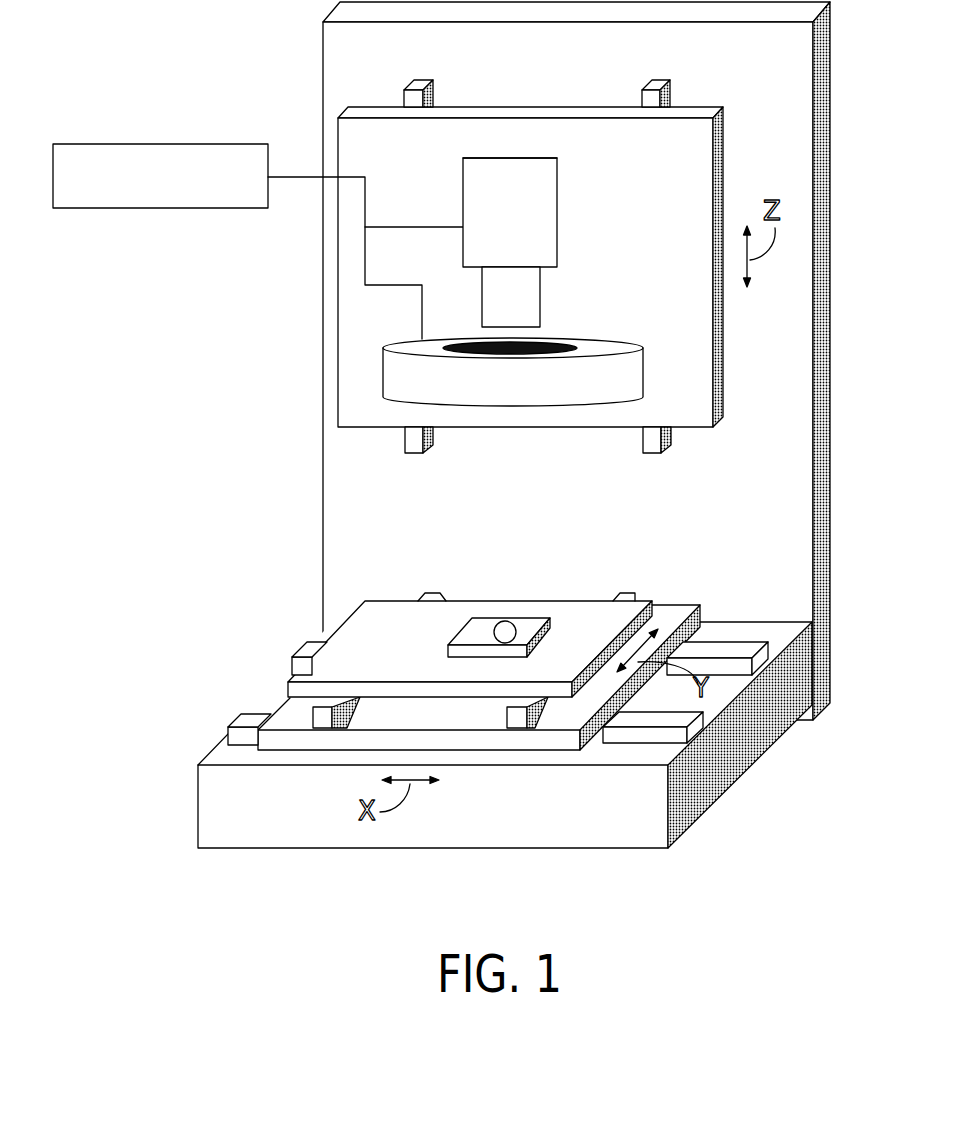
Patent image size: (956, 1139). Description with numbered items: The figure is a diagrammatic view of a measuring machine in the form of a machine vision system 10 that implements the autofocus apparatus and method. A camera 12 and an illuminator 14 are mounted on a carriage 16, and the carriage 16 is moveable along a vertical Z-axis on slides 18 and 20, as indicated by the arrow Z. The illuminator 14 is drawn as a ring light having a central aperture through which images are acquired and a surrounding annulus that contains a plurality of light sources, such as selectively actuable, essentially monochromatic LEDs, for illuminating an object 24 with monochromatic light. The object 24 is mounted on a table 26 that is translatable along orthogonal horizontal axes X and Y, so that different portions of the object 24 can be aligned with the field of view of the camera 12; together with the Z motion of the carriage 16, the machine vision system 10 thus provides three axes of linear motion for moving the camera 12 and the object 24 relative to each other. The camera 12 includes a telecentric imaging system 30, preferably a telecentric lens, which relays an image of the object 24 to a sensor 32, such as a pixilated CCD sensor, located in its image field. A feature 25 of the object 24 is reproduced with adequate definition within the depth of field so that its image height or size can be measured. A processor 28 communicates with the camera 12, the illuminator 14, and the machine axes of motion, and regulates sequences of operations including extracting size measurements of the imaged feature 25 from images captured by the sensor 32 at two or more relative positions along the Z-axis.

The machine vision system 10 is at (283, 302).
The camera 12 is at (557, 234).
The illuminator 14 is at (643, 382).
The carriage 16 is at (371, 173).
The slide 18 is at (433, 88).
The slide 20 is at (660, 80).
The object 24 is at (553, 630).
The feature 25 is at (508, 621).
The table 26 is at (370, 650).
The processor 28 is at (143, 185).
The telecentric imaging system 30 is at (540, 307).
The sensor 32 is at (500, 160).